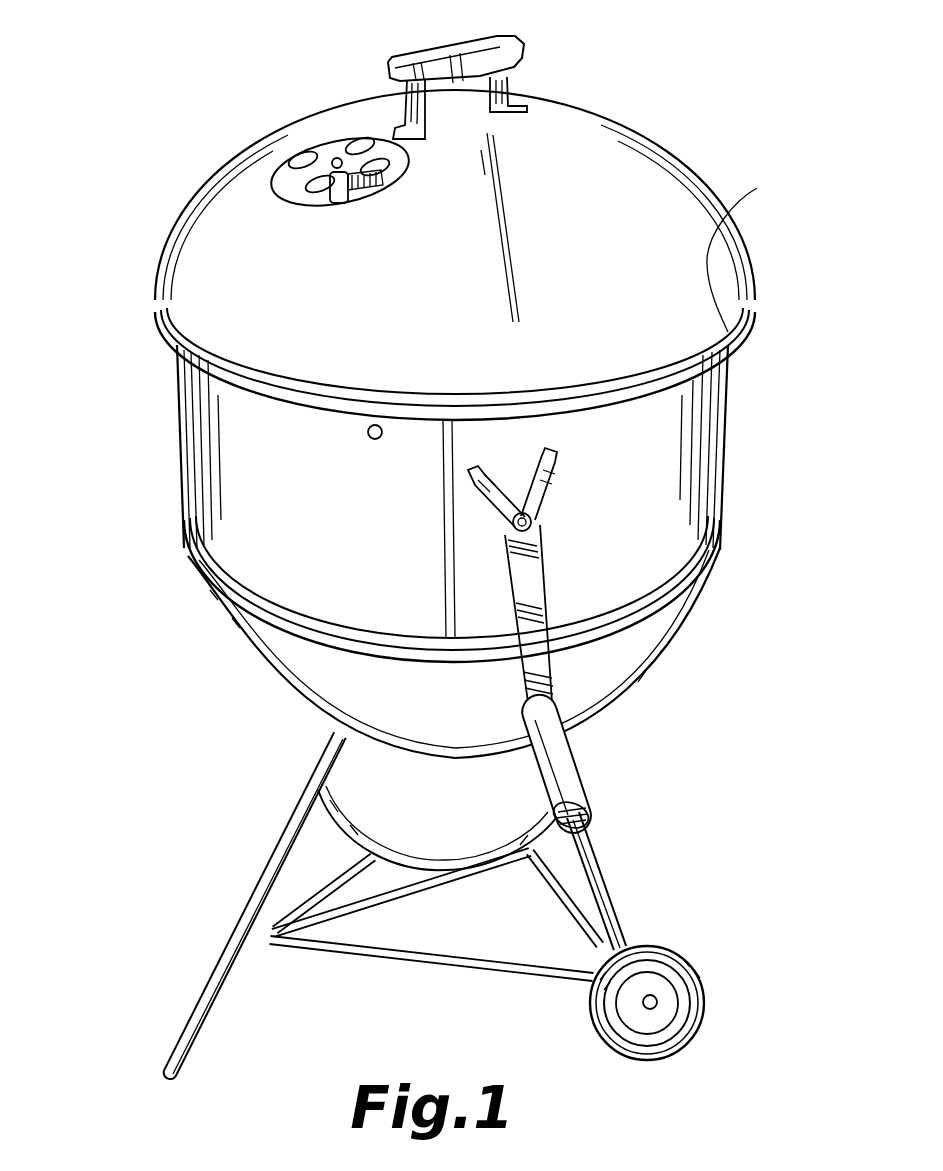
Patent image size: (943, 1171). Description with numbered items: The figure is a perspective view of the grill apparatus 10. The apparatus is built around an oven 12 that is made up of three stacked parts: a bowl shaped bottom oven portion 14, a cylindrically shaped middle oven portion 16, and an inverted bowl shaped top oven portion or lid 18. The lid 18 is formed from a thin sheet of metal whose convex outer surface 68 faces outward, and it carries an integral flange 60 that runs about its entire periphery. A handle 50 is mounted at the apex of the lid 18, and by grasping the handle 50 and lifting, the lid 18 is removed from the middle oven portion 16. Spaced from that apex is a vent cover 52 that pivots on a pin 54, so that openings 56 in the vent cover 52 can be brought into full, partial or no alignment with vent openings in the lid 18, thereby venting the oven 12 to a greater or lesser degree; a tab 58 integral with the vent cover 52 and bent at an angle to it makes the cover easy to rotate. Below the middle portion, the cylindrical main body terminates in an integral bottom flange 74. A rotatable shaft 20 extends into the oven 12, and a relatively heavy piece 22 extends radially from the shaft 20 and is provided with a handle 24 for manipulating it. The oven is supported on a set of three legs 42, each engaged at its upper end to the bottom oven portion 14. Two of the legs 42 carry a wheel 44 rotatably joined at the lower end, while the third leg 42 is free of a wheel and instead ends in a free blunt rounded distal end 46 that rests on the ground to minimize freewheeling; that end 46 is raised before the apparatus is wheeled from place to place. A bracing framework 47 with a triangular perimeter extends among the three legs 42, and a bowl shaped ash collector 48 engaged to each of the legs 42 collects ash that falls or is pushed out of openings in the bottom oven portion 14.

The grill apparatus 10 is at (166, 458).
The oven 12 is at (735, 427).
The bottom oven portion 14 is at (625, 700).
The middle oven portion 16 is at (177, 398).
The top oven portion or lid 18 is at (637, 121).
The rotatable shaft 20 is at (548, 572).
The relatively heavy piece 22 is at (674, 610).
The handle 24 is at (584, 792).
The legs 42 is at (240, 908).
The wheel 44 is at (699, 968).
The free blunt rounded distal end 46 is at (165, 1072).
The bracing framework 47 is at (379, 950).
The ash collector 48 is at (343, 843).
The handle 50 is at (455, 46).
The vent cover 52 is at (285, 190).
The pin 54 is at (336, 158).
The openings 56 is at (303, 158).
The tab 58 is at (347, 195).
The flange 60 is at (746, 250).
The outer surface 68 is at (591, 230).
The bottom flange 74 is at (196, 557).